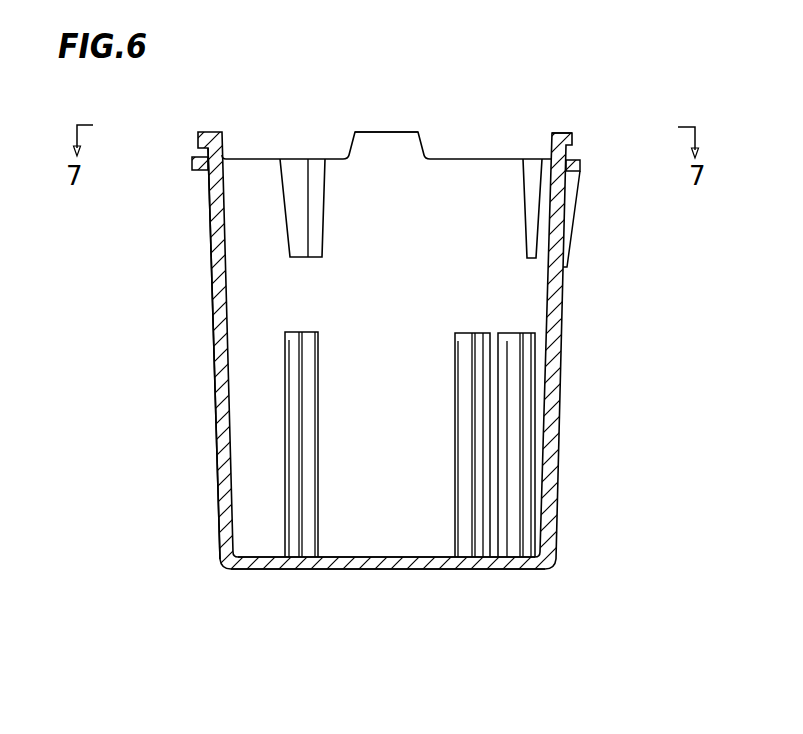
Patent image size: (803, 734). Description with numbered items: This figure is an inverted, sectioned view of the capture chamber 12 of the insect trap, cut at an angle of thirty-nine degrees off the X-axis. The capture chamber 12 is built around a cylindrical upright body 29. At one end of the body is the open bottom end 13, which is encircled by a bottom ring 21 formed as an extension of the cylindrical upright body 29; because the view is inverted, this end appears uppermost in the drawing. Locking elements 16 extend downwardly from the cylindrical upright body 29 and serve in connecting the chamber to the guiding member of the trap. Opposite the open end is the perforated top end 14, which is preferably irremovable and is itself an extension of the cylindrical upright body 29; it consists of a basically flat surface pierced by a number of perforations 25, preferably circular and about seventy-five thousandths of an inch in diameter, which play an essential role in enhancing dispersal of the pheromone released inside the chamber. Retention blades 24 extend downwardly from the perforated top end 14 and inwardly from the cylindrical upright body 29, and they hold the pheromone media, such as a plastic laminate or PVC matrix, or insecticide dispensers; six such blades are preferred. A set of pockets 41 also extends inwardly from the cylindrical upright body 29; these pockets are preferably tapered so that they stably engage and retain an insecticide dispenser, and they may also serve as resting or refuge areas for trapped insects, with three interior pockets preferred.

The capture chamber 12 is at (295, 102).
The open bottom end 13 is at (440, 160).
The perforated top end 14 is at (428, 570).
The locking elements 16 is at (367, 138).
The bottom ring 21 is at (580, 163).
The retention blades 24 is at (470, 450).
The perforations 25 is at (333, 570).
The cylindrical upright body 29 is at (209, 201).
The set of pockets 41 is at (300, 188).